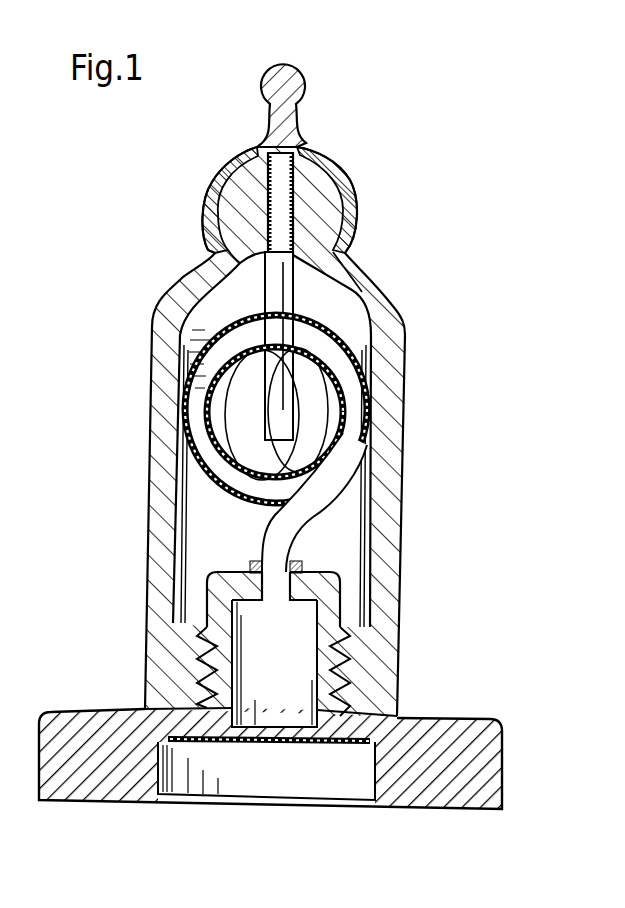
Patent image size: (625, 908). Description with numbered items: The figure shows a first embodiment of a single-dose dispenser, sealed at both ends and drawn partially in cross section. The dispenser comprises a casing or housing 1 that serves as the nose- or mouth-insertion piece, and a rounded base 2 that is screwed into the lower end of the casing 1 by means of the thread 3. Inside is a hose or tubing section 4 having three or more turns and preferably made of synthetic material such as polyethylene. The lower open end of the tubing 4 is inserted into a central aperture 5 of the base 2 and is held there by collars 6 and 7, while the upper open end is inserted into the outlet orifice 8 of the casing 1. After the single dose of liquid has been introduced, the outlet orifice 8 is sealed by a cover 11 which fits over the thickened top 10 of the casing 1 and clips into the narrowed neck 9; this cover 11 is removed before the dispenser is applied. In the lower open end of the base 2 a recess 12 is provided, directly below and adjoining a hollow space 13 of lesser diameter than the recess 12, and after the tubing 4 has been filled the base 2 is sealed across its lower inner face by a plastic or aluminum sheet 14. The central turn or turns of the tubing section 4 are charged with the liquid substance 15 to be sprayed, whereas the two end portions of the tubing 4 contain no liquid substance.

The casing 1 is at (410, 393).
The rounded base 2 is at (502, 768).
The thread 3 is at (207, 657).
The hose or tubing section 4 is at (335, 480).
The central aperture 5 is at (256, 568).
The collar 6 is at (296, 570).
The collar 7 is at (268, 577).
The outlet orifice 8 is at (266, 128).
The narrowed neck 9 is at (346, 258).
The thickened top 10 is at (222, 211).
The cover 11 is at (298, 120).
The recess 12 is at (281, 790).
The hollow space 13 is at (279, 665).
The plastic or aluminum sheet 14 is at (348, 743).
The liquid substance 15 is at (193, 404).